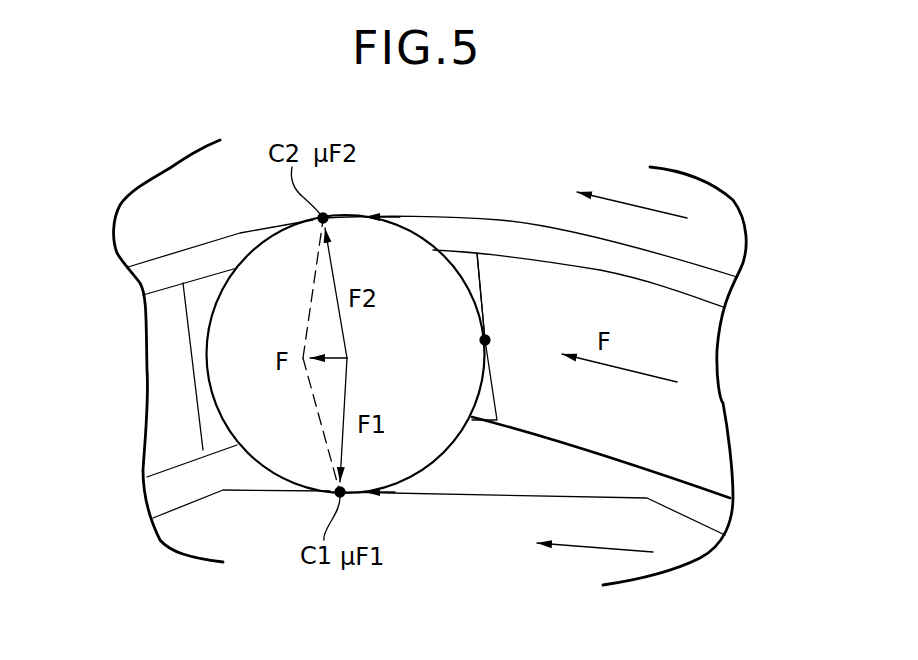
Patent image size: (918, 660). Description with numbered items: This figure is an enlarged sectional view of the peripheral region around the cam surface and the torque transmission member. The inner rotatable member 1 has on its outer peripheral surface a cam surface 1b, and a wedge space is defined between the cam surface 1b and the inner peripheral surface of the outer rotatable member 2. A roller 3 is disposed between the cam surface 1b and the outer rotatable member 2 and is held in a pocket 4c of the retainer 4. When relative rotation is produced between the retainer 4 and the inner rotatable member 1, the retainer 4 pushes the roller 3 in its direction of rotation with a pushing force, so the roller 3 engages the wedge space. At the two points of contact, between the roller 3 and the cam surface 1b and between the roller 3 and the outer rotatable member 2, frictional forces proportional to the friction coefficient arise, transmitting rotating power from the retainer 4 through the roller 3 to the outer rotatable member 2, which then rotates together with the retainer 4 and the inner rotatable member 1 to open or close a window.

The inner rotatable member 1 is at (183, 510).
The cam surface 1b is at (607, 498).
The outer rotatable member 2 is at (147, 210).
The roller 3 is at (272, 257).
The retainer 4 is at (157, 338).
The pocket 4c is at (475, 267).